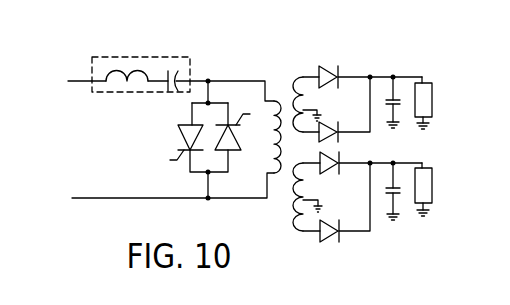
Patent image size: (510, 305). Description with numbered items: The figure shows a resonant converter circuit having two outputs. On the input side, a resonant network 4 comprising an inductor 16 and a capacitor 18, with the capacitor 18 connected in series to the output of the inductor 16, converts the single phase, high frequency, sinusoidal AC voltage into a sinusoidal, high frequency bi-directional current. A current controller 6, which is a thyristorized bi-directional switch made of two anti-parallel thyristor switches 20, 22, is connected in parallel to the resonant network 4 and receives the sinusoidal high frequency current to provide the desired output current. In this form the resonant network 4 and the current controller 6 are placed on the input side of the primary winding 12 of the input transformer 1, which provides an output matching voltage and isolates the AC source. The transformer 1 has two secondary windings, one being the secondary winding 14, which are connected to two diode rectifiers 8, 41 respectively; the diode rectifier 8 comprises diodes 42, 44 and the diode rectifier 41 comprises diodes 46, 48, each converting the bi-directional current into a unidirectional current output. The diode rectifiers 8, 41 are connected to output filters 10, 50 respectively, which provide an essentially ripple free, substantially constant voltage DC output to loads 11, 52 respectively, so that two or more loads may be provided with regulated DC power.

The resonant network 4 is at (105, 56).
The inductor 16 is at (117, 78).
The capacitor 18 is at (168, 73).
The current controller 6 is at (197, 154).
The thyristor switch 20 is at (187, 142).
The thyristor switch 22 is at (237, 152).
The input transformer 1 is at (258, 102).
The primary winding 12 is at (274, 97).
The secondary winding 14 is at (292, 82).
The diode 42 is at (327, 64).
The diode 44 is at (327, 131).
The diode rectifier 8 is at (345, 93).
The output filter 10 is at (398, 90).
The load 11 is at (433, 98).
The diode rectifier 41 is at (346, 210).
The diode 46 is at (324, 171).
The diode 48 is at (327, 241).
The output filter 50 is at (398, 200).
The load 52 is at (433, 188).